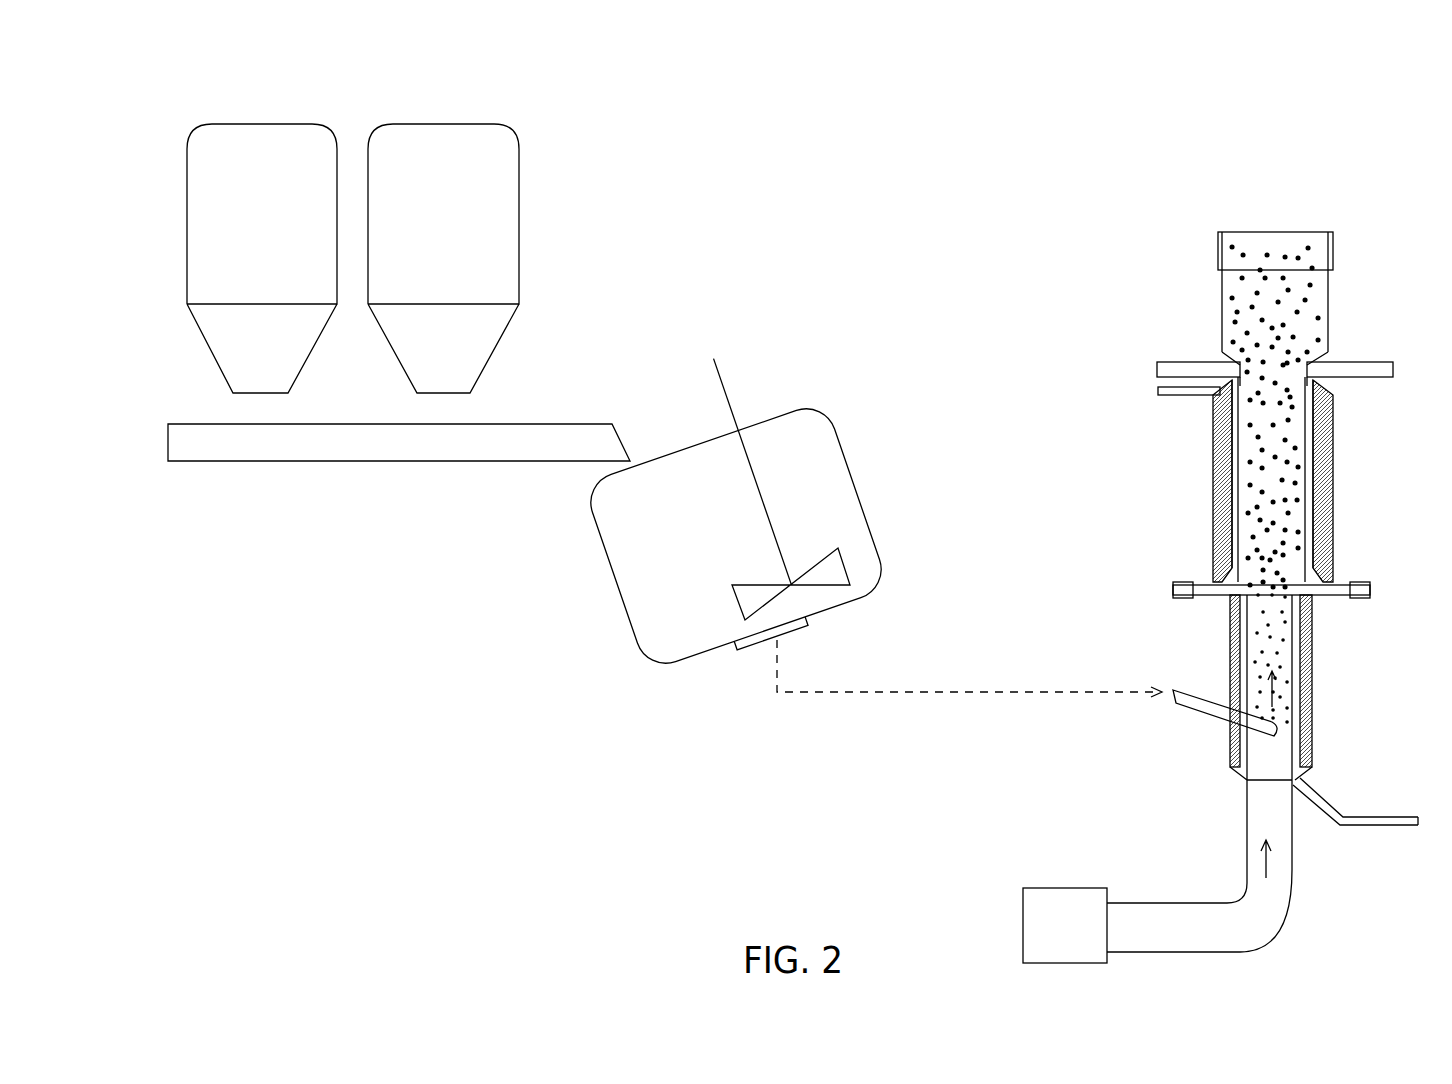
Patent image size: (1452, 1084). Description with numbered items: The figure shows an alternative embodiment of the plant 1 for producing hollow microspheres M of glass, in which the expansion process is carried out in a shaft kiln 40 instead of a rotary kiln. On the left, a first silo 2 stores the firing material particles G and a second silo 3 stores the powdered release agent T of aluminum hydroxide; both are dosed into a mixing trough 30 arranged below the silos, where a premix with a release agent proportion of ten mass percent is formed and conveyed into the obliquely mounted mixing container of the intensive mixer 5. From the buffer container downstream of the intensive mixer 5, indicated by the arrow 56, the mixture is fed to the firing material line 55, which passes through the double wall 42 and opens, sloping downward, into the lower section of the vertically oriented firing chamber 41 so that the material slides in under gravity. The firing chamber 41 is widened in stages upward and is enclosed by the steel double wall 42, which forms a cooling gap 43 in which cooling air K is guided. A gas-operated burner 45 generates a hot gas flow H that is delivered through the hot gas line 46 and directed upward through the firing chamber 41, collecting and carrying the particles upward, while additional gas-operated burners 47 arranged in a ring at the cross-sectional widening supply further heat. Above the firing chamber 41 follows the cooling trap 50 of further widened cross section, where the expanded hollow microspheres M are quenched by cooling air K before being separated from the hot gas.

The plant 1 is at (958, 281).
The first silo 2 is at (188, 226).
The second silo 3 is at (518, 213).
The mixing trough 30 is at (268, 462).
The intensive mixer 5 is at (764, 365).
The arrow 56 is at (968, 694).
The shaft kiln 40 is at (1267, 442).
The cooling trap 50 is at (1330, 287).
The firing chamber 41 is at (1300, 467).
The double wall 42 is at (1313, 505).
The cooling gap 43 is at (1312, 435).
The additional gas-operated burners 47 is at (1175, 597).
The firing material line 55 is at (1215, 725).
The gas-operated burner 45 is at (1060, 888).
The hot gas line 46 is at (1272, 932).
The firing material particles G is at (210, 242).
The release agent T is at (495, 255).
The hollow microspheres M is at (1284, 262).
The cooling air K is at (1240, 355).
The hot gas flow H is at (1262, 694).